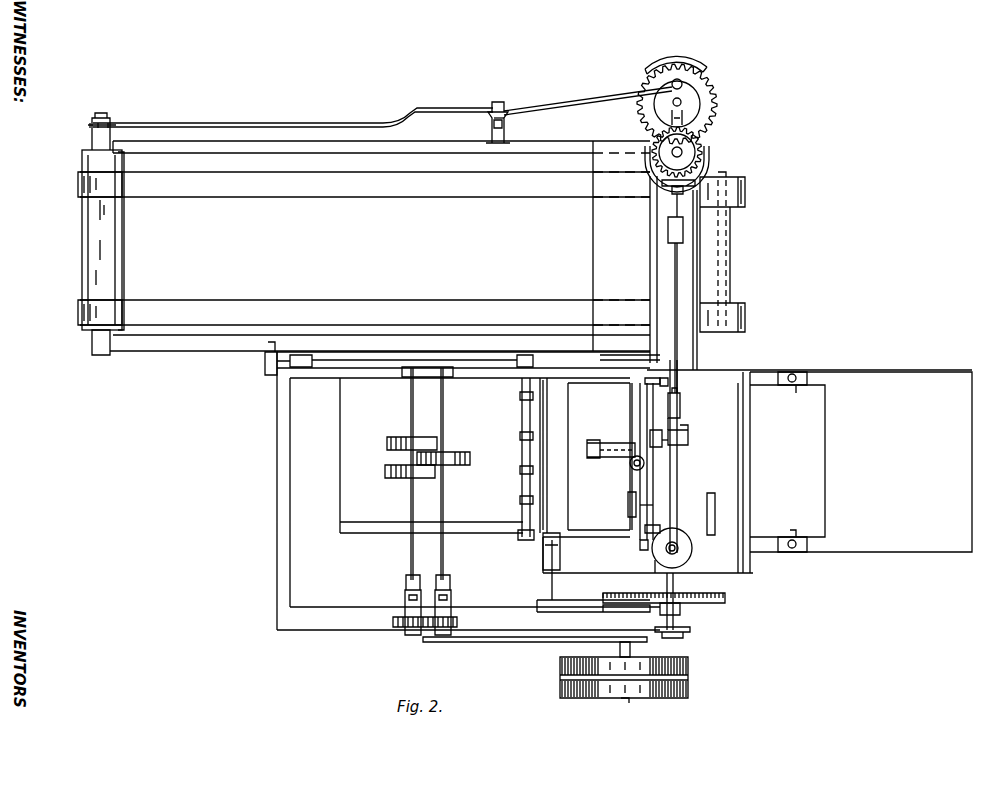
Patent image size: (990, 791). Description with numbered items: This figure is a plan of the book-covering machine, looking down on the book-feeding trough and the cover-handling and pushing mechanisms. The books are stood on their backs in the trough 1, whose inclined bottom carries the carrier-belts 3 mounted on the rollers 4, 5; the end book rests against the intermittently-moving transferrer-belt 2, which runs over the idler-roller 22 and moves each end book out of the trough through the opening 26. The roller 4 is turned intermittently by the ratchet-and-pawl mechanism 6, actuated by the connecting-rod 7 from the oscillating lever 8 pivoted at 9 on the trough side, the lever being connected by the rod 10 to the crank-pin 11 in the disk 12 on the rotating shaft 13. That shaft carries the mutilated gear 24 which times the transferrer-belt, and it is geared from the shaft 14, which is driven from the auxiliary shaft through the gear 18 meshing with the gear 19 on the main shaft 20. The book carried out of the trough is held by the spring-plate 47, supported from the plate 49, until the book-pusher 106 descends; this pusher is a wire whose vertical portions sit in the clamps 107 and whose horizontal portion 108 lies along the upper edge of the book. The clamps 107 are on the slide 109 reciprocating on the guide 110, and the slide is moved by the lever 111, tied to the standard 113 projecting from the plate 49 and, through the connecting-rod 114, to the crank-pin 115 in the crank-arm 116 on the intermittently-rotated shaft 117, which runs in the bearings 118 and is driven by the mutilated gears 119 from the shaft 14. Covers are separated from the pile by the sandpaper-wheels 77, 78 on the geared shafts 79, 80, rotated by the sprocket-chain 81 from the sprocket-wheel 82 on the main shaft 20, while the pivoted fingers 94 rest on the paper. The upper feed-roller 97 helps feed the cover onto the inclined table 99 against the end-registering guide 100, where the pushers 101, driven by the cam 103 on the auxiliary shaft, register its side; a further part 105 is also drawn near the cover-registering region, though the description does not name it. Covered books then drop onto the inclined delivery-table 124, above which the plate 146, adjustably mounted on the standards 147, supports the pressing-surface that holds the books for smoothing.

The trough 1 is at (348, 233).
The transferrer-belt 2 is at (694, 276).
The carrier-belts 3 is at (80, 310).
The roller 4 is at (80, 221).
The roller 5 is at (745, 306).
The ratchet-and-pawl mechanism 6 is at (97, 116).
The connecting-rod 7 is at (297, 122).
The oscillating lever 8 is at (506, 114).
The pivot 9 is at (498, 100).
The rod 10 is at (600, 92).
The crank-pin 11 is at (683, 81).
The disk 12 is at (700, 97).
The rotating shaft 13 is at (683, 103).
The shaft 14 is at (692, 152).
The gear 18 is at (678, 612).
The gear 19 is at (603, 597).
The main shaft 20 is at (632, 700).
The idler-roller 22 is at (692, 556).
The mutilated gear 24 is at (655, 66).
The opening 26 is at (650, 347).
The spring-plate 47 is at (686, 468).
The plate 49 is at (645, 402).
The sandpaper-wheel 77 is at (470, 465).
The sandpaper-wheel 78 is at (388, 468).
The shaft 79 is at (446, 555).
The shaft 80 is at (410, 556).
The sprocket-chain 81 is at (488, 640).
The sprocket-wheel 82 is at (638, 649).
The fingers 94 is at (520, 500).
The upper feed-roller 97 is at (540, 548).
The inclined table 99 is at (752, 563).
The end-registering guide 100 is at (750, 500).
The pushers 101 is at (716, 521).
The cam 103 is at (690, 630).
The bracket 105 is at (796, 370).
The book-pusher 106 is at (650, 546).
The clamps 107 is at (655, 527).
The horizontal portion 108 is at (660, 505).
The slide 109 is at (648, 418).
The guide 110 is at (630, 466).
The lever 111 is at (606, 442).
The standard 113 is at (617, 468).
The connecting-rod 114 is at (665, 446).
The crank-pin 115 is at (690, 437).
The crank-arm 116 is at (680, 428).
The intermittently-rotated shaft 117 is at (680, 262).
The bearings 118 is at (682, 404).
The gears 119 is at (695, 180).
The inclined delivery-table 124 is at (861, 462).
The plate 146 is at (825, 480).
The standards 147 is at (808, 544).